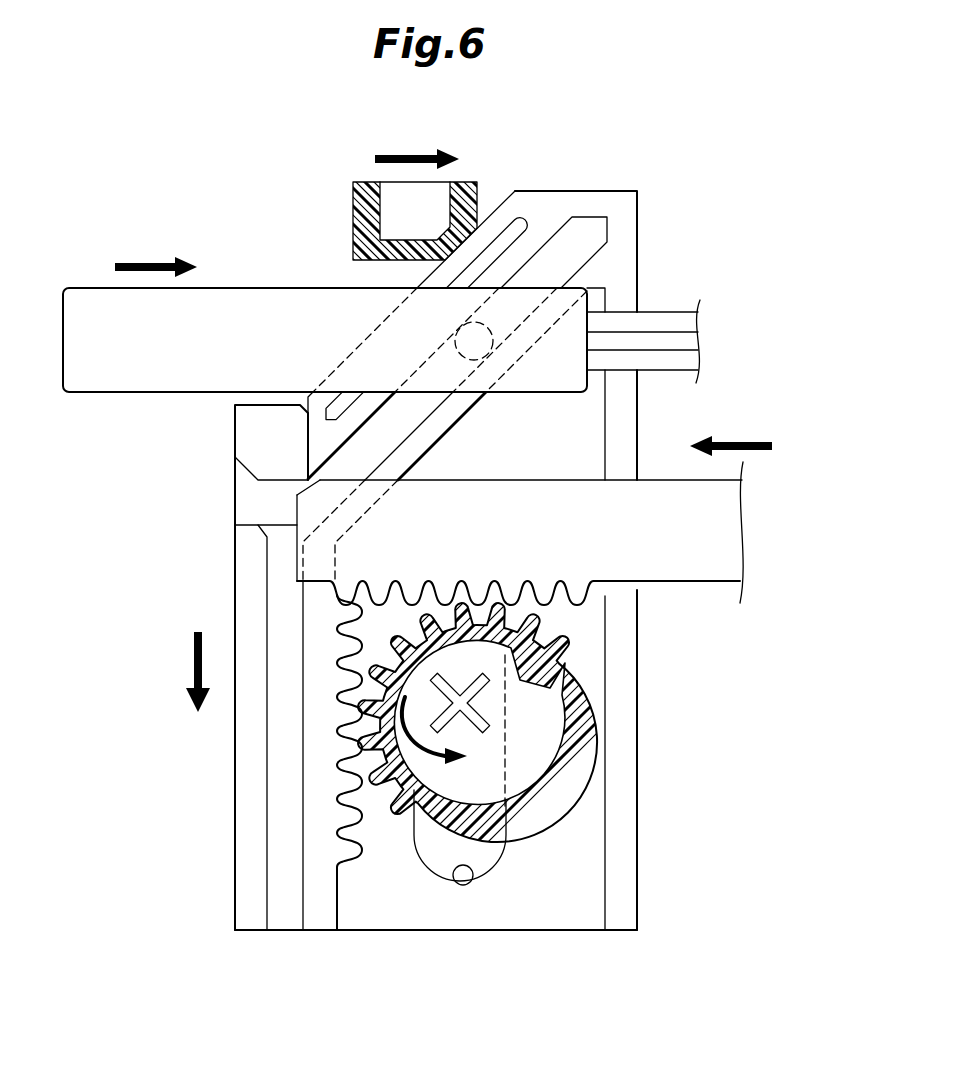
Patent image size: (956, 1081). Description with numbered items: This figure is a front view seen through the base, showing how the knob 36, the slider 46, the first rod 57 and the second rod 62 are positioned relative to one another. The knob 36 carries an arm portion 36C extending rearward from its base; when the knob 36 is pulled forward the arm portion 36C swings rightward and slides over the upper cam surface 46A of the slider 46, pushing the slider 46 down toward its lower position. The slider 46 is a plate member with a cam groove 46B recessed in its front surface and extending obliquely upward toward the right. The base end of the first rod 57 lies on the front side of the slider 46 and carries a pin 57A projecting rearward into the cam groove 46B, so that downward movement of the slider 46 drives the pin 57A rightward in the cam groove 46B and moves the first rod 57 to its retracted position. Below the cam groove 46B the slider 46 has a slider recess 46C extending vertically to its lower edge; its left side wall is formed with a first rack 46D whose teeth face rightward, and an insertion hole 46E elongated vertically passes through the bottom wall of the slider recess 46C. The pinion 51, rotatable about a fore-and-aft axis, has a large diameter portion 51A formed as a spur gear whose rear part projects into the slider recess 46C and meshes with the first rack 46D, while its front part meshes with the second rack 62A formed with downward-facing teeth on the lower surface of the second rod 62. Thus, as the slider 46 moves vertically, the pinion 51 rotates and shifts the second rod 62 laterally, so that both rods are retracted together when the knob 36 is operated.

The knob 36 is at (349, 195).
The arm portion 36C is at (368, 216).
The slider 46 is at (354, 946).
The upper cam surface 46A is at (497, 206).
The cam groove 46B is at (576, 265).
The slider recess 46C is at (558, 912).
The first rack 46D is at (363, 828).
The insertion hole 46E is at (477, 884).
The pinion 51 is at (572, 769).
The large diameter portion 51A is at (566, 676).
The first rod 57 is at (128, 378).
The pin 57A is at (458, 348).
The second rod 62 is at (725, 519).
The second rack 62A is at (556, 606).